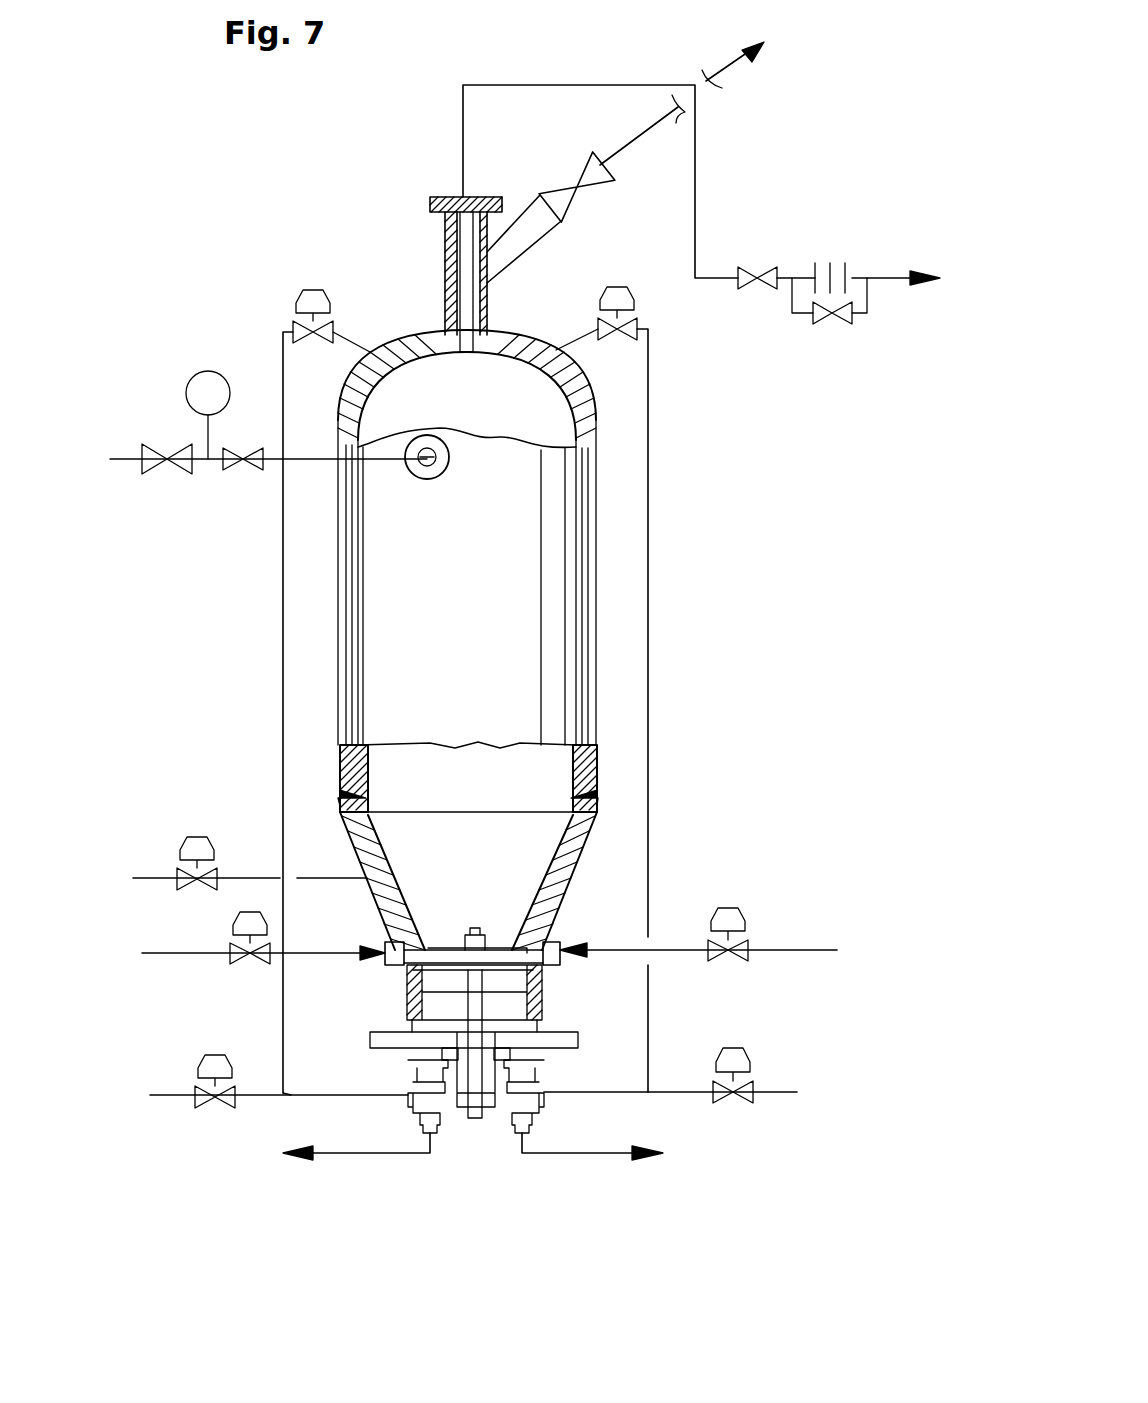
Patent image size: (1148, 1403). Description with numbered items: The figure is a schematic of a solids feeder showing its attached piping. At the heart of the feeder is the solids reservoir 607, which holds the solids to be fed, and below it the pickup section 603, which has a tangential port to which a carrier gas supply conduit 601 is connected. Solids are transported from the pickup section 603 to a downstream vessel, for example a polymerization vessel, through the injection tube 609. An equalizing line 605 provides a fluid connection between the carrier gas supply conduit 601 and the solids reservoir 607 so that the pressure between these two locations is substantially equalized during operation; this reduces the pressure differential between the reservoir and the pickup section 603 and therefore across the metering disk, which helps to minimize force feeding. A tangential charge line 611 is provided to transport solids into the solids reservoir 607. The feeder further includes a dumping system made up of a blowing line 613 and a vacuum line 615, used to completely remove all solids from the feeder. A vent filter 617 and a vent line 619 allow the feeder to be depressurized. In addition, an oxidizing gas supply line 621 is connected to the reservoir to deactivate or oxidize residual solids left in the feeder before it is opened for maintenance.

The carrier gas supply conduit 601 is at (776, 1090).
The pickup section 603 is at (540, 1107).
The equalizing line 605 is at (648, 483).
The solids reservoir 607 is at (543, 435).
The injection tube 609 is at (563, 1155).
The tangential charge line 611 is at (413, 472).
The blowing line 613 is at (686, 945).
The vacuum line 615 is at (722, 83).
The vent filter 617 is at (447, 272).
The vent line 619 is at (695, 160).
The oxidizing gas supply line 621 is at (243, 877).